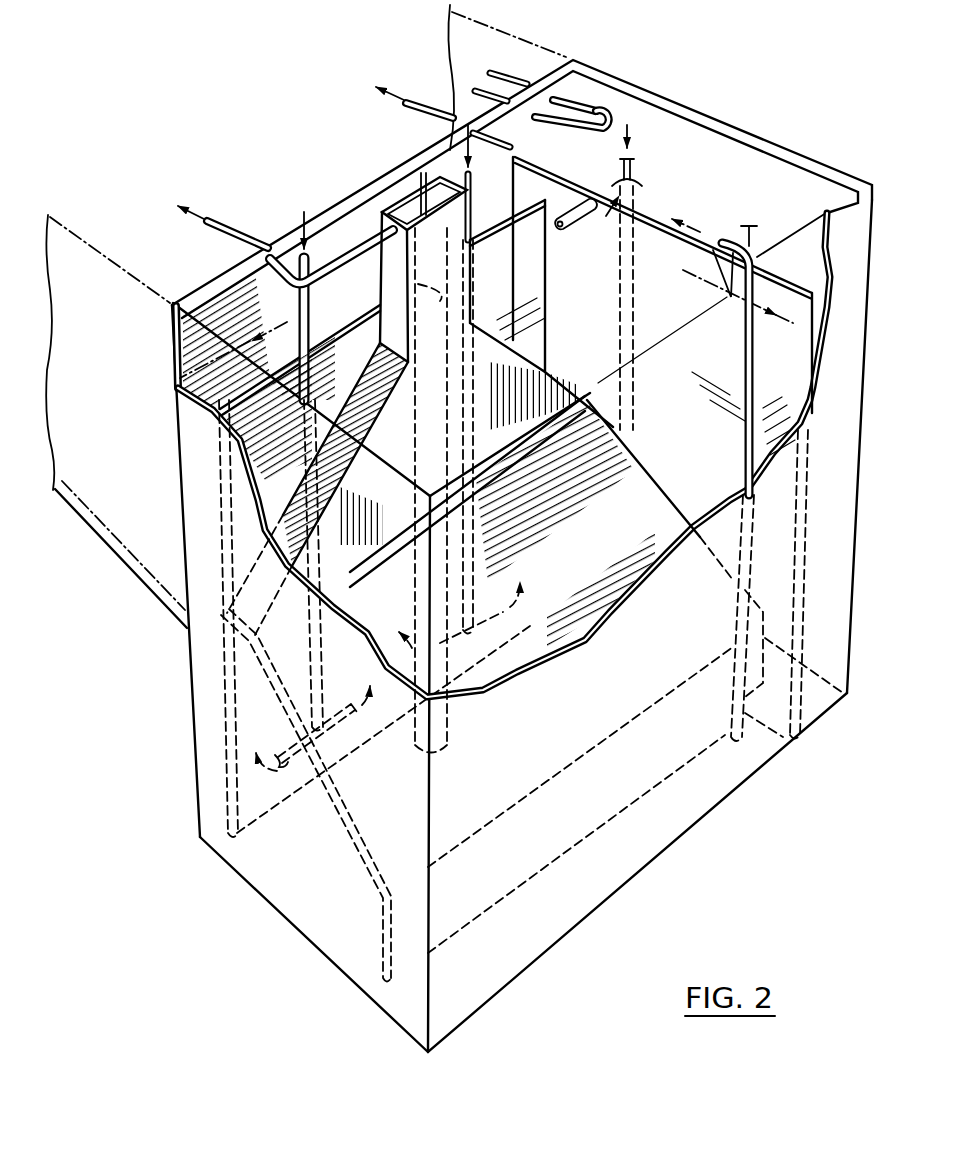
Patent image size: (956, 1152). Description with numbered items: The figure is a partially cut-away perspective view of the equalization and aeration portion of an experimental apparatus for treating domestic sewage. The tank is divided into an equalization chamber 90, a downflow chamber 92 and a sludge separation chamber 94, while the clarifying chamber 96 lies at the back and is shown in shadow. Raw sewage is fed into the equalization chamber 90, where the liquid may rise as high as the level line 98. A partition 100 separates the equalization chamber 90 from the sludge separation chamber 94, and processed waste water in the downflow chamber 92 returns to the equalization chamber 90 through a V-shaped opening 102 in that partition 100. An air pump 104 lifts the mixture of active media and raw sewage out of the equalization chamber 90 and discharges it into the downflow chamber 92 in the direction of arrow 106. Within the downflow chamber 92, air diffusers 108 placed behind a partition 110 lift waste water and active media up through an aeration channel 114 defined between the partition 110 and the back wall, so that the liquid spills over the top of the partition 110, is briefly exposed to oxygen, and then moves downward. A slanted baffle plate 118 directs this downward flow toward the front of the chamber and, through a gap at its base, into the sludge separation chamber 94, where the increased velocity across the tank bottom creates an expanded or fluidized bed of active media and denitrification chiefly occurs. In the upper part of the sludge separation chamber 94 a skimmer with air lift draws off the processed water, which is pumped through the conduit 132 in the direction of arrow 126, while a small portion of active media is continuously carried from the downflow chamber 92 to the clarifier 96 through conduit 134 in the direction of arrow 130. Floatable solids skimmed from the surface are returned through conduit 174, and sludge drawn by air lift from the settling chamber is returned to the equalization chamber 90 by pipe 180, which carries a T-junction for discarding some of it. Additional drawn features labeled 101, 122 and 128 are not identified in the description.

The equalization chamber 90 is at (736, 148).
The downflow chamber 92 is at (618, 491).
The sludge separation chamber 94 is at (320, 878).
The clarifying chamber 96 is at (170, 550).
The level line 98 is at (780, 316).
The partition 100 is at (652, 245).
The broken-away front wall 101 is at (362, 628).
The V-shaped opening 102 is at (729, 297).
The air pump 104 is at (634, 182).
The arrow 106 is at (567, 229).
The air diffusers 108 is at (290, 752).
The partition 110 is at (237, 789).
The aeration channel 114 is at (227, 388).
The slanted baffle plate 118 is at (358, 838).
The downcomer box 122 is at (447, 293).
The arrow 126 is at (172, 198).
The feed pipe 128 is at (758, 246).
The arrow 130 is at (362, 81).
The conduit 132 is at (232, 232).
The conduit 134 is at (413, 100).
The conduit 174 is at (612, 110).
The pipe 180 is at (576, 98).